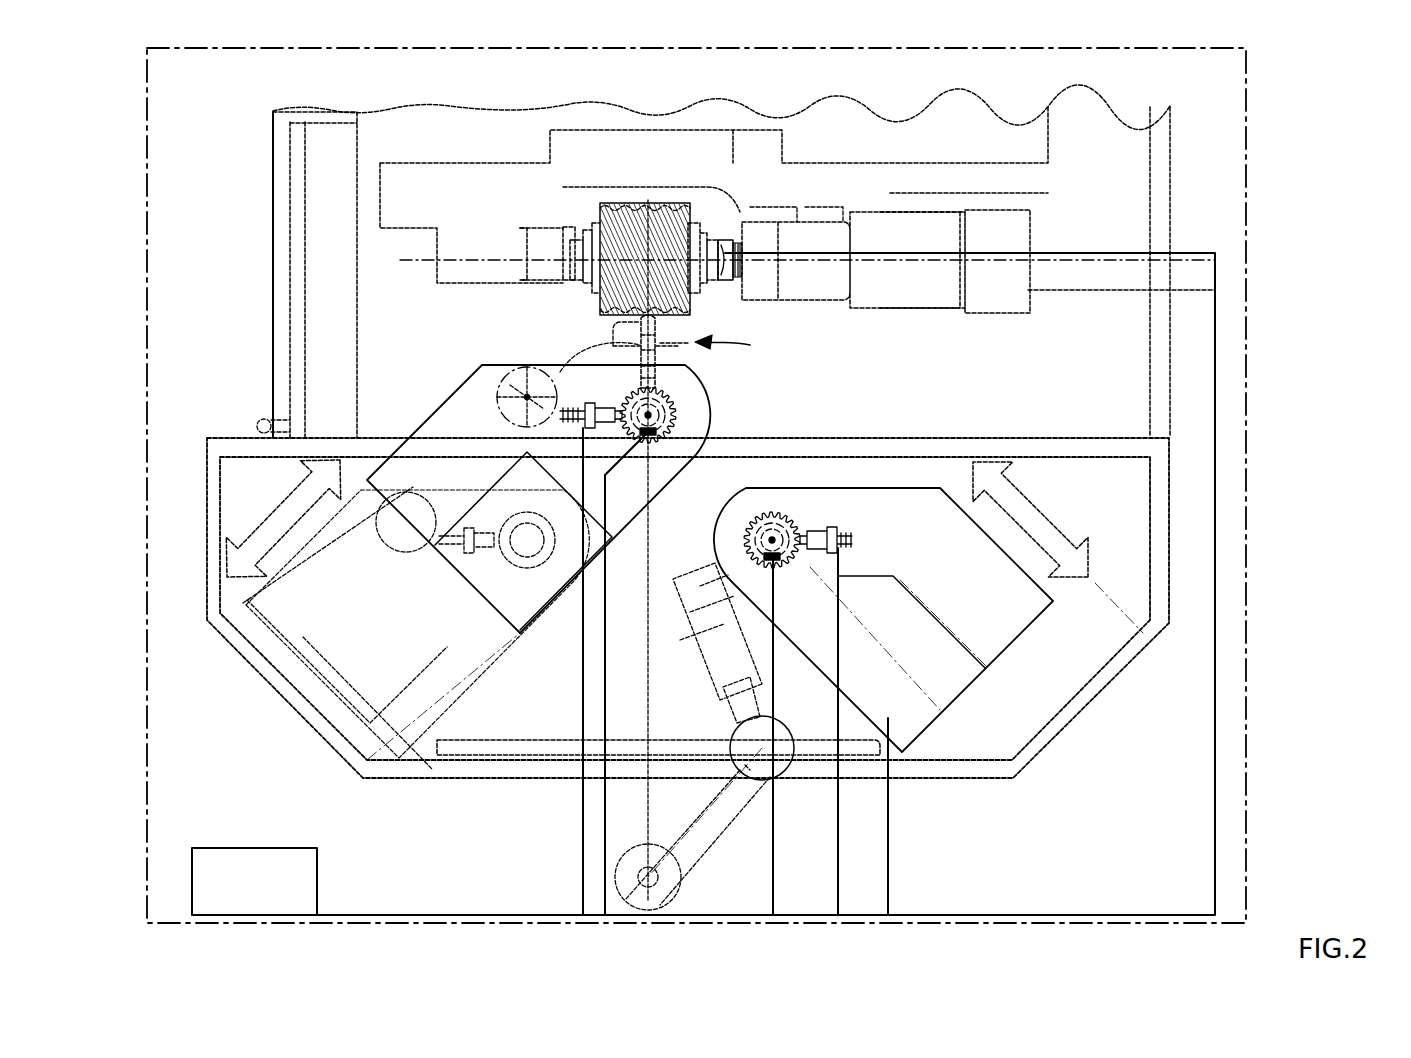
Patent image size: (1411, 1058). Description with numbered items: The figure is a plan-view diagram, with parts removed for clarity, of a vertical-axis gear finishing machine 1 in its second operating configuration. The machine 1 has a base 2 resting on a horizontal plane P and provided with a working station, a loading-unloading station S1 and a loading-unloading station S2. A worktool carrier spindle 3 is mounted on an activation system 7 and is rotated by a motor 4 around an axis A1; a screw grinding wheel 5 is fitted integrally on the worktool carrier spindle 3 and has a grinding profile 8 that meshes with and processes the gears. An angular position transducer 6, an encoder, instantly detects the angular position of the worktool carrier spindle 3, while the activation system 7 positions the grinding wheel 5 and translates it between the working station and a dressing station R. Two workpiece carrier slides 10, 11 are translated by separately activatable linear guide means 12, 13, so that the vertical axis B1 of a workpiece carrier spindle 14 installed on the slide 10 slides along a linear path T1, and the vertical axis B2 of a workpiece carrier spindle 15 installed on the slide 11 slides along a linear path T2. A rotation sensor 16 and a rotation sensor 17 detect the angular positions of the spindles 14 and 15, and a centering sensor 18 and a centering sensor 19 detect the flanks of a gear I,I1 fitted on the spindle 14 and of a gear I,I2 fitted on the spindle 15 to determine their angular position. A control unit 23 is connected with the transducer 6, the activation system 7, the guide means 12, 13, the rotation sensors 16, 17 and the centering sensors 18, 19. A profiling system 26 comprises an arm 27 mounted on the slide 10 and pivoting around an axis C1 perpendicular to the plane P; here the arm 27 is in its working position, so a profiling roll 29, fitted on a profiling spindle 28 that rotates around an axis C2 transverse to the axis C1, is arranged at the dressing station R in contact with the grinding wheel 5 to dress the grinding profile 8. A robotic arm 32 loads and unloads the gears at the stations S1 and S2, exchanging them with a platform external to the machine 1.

The machine for the finishing of gears 1 is at (1268, 148).
The base 2 is at (1128, 187).
The worktool carrier spindle 3 is at (563, 250).
The motor 4 is at (1020, 235).
The grinding wheel 5 is at (666, 240).
The angular position transducer 6 is at (722, 250).
The activation system 7 is at (850, 125).
The grinding profile 8 is at (628, 205).
The workpiece carrier slide 10 is at (320, 668).
The workpiece carrier slide 11 is at (915, 713).
The linear guide means 12 is at (500, 575).
The linear guide means 13 is at (955, 680).
The workpiece carrier spindle 14 is at (690, 408).
The workpiece carrier spindle 15 is at (795, 512).
The rotation sensor 16 is at (660, 478).
The rotation sensor 17 is at (686, 622).
The centering sensor 18 is at (563, 372).
The centering sensor 19 is at (850, 535).
The control unit 23 is at (220, 865).
The profiling system 26 is at (318, 615).
The arm 27 is at (560, 340).
The profiling spindle 28 is at (660, 343).
The profiling roll 29 is at (683, 405).
The robotic arm 32 is at (676, 678).
The axis A1 is at (450, 232).
The vertical axis B1 is at (700, 422).
The vertical axis B2 is at (795, 530).
The axis C1 is at (497, 390).
The axis C2 is at (600, 338).
The horizontal plane P is at (185, 183).
The dressing station R is at (734, 345).
The loading-unloading station S1 is at (370, 762).
The loading-unloading station S2 is at (807, 563).
The linear path T1 is at (332, 728).
The linear path T2 is at (900, 660).
The gear I,I1 is at (710, 458).
The gear I,I2 is at (808, 580).